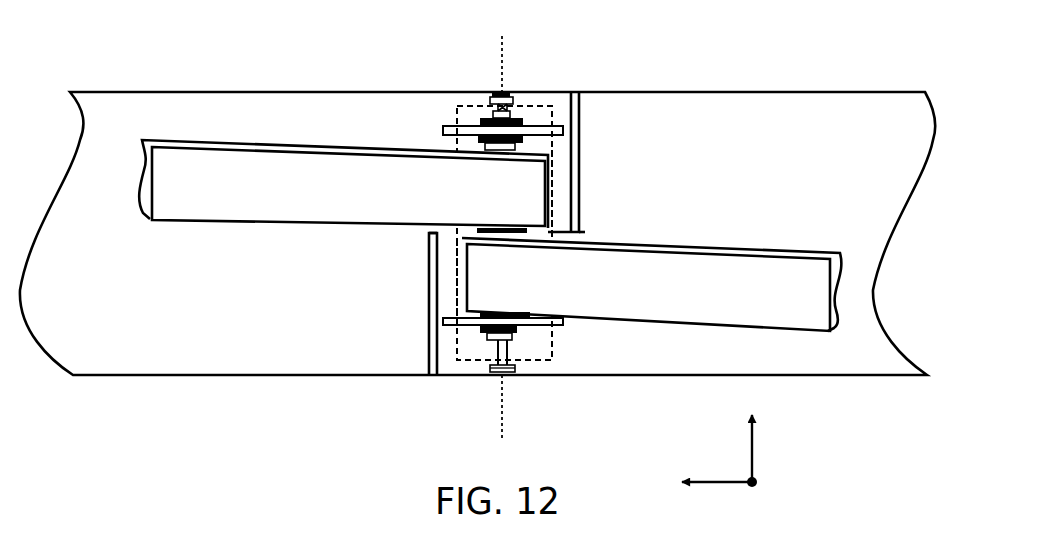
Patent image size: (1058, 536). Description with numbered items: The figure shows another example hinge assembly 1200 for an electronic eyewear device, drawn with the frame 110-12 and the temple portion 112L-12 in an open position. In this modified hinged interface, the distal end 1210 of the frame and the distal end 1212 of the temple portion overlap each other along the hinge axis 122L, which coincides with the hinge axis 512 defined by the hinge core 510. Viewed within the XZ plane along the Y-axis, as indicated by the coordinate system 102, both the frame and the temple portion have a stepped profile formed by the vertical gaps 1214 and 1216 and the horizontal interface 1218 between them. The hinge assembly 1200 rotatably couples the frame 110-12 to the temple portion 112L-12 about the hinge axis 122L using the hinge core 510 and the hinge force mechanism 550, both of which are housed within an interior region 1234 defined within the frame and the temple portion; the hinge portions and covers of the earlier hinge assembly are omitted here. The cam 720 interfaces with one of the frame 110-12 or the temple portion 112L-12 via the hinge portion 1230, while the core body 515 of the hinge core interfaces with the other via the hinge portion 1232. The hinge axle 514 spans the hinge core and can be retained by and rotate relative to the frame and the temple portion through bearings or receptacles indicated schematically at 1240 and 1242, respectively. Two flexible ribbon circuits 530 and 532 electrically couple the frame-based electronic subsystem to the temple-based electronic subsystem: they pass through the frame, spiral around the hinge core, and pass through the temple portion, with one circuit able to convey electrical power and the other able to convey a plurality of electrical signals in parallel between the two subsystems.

The frame 110-12 is at (157, 92).
The temple portion 112L-12 is at (758, 92).
The hinge axis 122L is at (497, 236).
The hinge axis 512 is at (497, 236).
The hinge assembly 1200 is at (460, 103).
The distal end of the frame 1210 is at (556, 192).
The distal end of the temple portion 1212 is at (455, 278).
The vertical gap 1214 is at (433, 378).
The vertical gap 1216 is at (575, 89).
The horizontal interface 1218 is at (426, 233).
The hinge portion 1230 is at (455, 129).
The hinge portion 1232 is at (560, 323).
The interior region 1234 is at (536, 339).
The bearing or receptacle 1240 is at (497, 93).
The bearing or receptacle 1242 is at (508, 372).
The hinge core 510 is at (472, 117).
The hinge force mechanism 550 is at (435, 105).
The hinge axle 514 is at (507, 106).
The core body 515 is at (480, 315).
The cam 720 is at (518, 139).
The flexible ribbon circuit 530 is at (235, 144).
The flexible ribbon circuit 532 is at (277, 152).
The coordinate system 102 is at (721, 448).